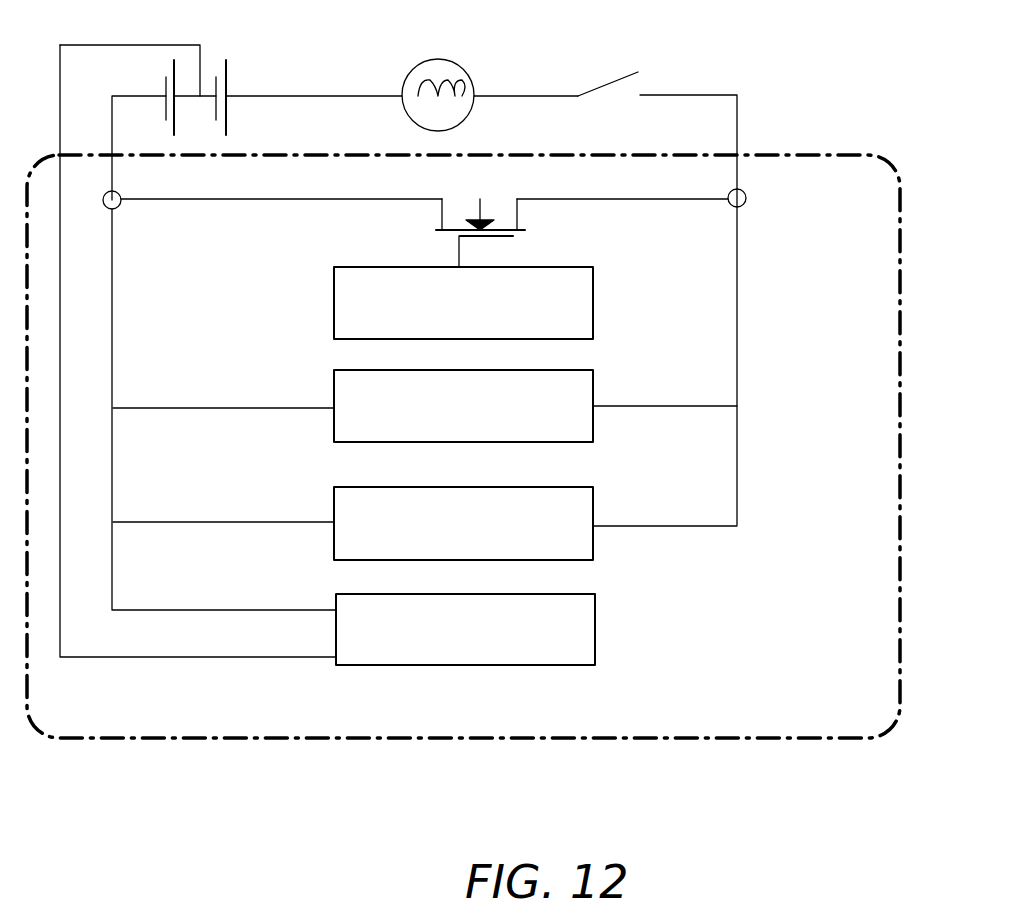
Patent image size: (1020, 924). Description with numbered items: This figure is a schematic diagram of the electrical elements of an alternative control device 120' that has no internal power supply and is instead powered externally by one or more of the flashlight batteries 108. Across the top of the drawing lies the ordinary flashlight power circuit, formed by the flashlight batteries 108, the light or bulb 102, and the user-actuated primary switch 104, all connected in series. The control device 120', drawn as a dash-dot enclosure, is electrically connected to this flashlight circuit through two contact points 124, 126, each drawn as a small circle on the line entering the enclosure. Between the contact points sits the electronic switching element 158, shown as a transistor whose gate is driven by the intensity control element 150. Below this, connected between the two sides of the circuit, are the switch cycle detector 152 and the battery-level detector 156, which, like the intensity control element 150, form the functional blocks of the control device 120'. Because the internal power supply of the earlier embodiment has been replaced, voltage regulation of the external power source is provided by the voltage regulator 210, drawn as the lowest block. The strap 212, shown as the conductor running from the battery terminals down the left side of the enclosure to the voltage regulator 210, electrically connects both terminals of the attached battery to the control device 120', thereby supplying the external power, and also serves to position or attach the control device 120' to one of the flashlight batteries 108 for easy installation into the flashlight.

The light or bulb 102 is at (430, 58).
The user-actuated primary switch 104 is at (607, 82).
The flashlight batteries 108 is at (232, 72).
The control device 120' is at (463, 510).
The contact point 124 is at (118, 208).
The contact point 126 is at (746, 196).
The intensity control element 150 is at (470, 326).
The switch cycle detector 152 is at (462, 430).
The battery-level detector 156 is at (468, 546).
The electronic switching element 158 is at (498, 238).
The voltage regulator 210 is at (462, 646).
The strap 212 is at (113, 665).